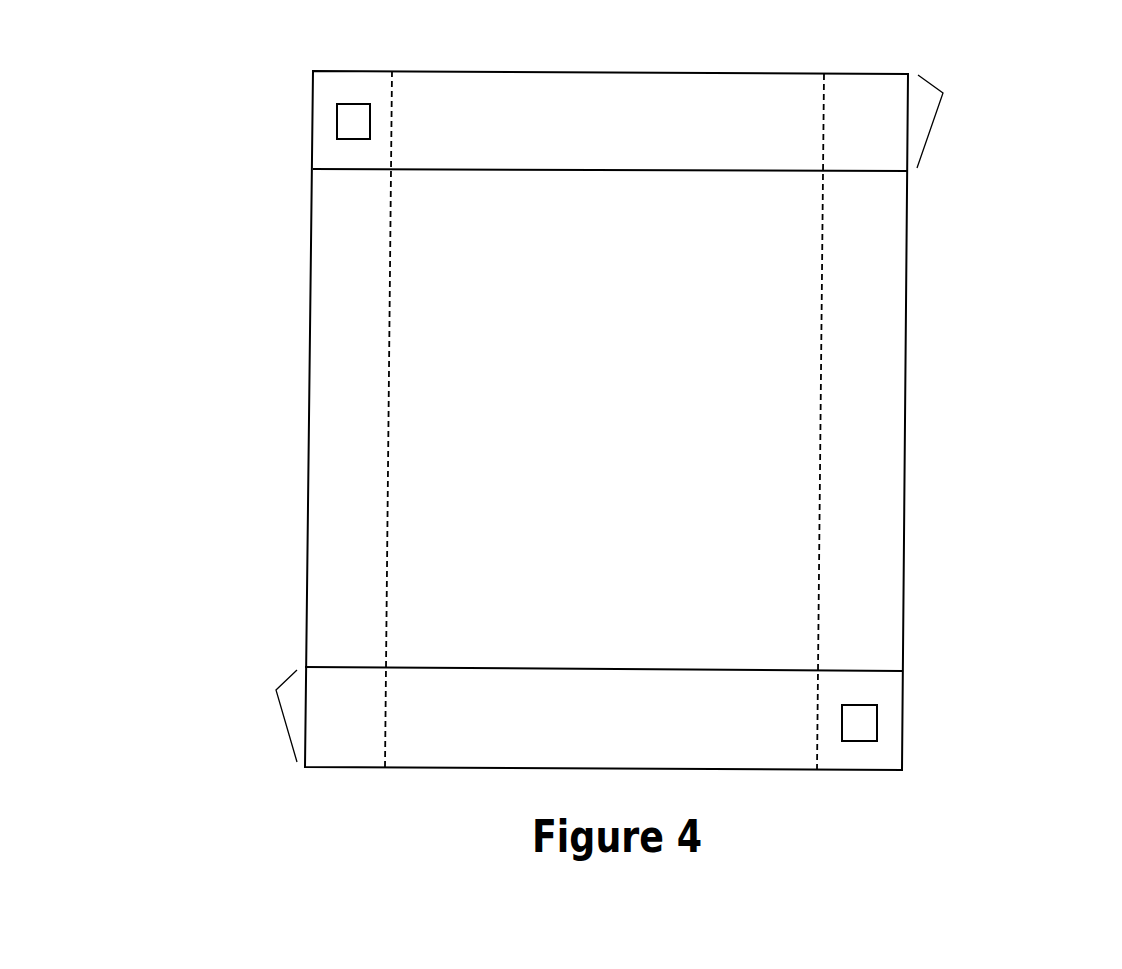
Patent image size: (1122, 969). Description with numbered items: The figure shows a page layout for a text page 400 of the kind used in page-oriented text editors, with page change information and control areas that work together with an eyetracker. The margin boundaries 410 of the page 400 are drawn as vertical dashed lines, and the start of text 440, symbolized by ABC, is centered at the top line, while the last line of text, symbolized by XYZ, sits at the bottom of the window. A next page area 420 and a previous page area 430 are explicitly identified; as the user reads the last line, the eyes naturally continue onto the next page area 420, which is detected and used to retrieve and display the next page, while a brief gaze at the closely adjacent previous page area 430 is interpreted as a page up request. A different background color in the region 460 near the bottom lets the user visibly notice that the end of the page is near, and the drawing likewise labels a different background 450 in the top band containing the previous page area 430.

The page 400 is at (518, 420).
The margin boundaries 410 is at (592, 475).
The next page area 420 is at (864, 750).
The previous page area 430 is at (272, 140).
The start of text 440 is at (438, 72).
The header region with different background 450 is at (709, 125).
The region 460 is at (504, 714).